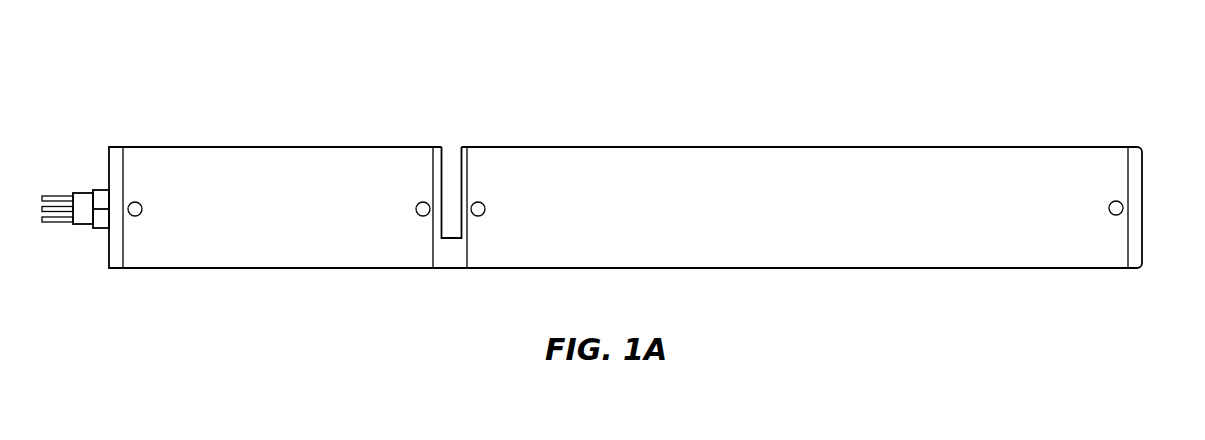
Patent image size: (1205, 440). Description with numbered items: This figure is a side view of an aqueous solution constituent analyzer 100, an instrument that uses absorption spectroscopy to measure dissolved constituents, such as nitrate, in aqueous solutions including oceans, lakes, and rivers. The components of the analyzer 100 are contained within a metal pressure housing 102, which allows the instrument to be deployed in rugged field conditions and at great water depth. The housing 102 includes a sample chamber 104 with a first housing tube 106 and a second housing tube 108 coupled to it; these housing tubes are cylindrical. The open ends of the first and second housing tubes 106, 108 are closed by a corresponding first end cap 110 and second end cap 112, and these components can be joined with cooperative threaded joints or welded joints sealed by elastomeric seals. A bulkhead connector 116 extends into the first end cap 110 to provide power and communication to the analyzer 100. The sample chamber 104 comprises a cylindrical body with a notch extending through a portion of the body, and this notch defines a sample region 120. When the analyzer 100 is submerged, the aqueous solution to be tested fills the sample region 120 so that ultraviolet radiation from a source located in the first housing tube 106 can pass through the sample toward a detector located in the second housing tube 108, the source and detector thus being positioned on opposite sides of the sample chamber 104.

The aqueous solution constituent analyzer 100 is at (266, 79).
The pressure housing 102 is at (700, 134).
The sample chamber 104 is at (452, 258).
The first housing tube 106 is at (288, 266).
The second housing tube 108 is at (918, 268).
The first end cap 110 is at (118, 162).
The second end cap 112 is at (1137, 158).
The bulkhead connector 116 is at (92, 230).
The sample region 120 is at (452, 142).